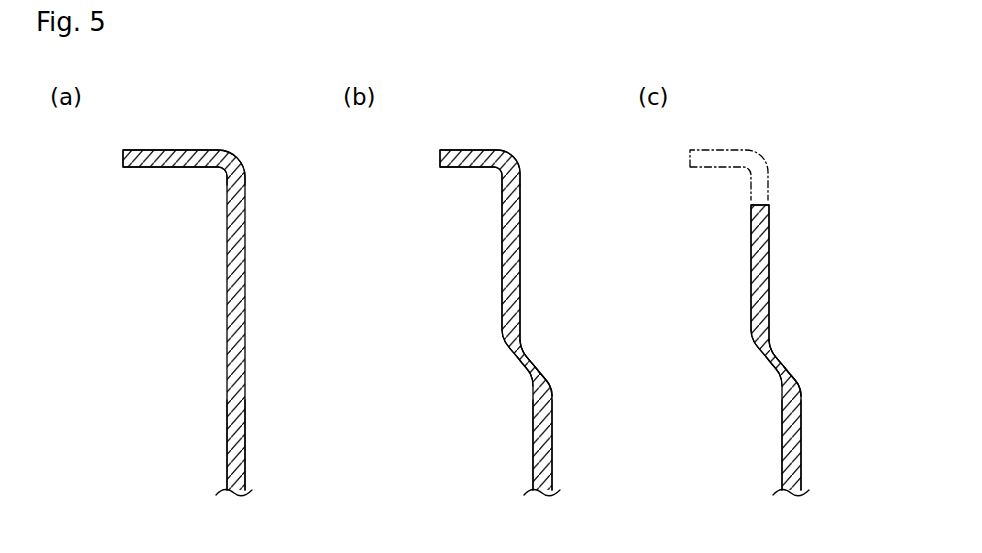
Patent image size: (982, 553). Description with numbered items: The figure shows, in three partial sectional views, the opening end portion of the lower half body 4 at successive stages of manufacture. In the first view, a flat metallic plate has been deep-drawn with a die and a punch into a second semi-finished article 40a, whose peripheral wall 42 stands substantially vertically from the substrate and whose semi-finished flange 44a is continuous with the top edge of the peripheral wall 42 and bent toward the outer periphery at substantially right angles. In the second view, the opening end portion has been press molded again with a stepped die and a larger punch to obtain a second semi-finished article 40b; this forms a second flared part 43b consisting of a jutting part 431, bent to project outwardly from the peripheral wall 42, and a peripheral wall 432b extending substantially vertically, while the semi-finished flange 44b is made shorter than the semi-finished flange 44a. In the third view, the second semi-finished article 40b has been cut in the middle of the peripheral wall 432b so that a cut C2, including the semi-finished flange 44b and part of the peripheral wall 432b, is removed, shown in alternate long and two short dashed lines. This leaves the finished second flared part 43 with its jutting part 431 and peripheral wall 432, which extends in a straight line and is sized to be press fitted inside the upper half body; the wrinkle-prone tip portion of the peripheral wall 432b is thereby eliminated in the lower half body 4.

The second semi-finished article 40a is at (246, 363).
The semi-finished flange 44a is at (186, 152).
The second semi-finished article 40b is at (489, 228).
The semi-finished flange 44b is at (468, 157).
The peripheral wall 432b is at (520, 245).
The second flared part 43b is at (502, 342).
The lower half body 4 is at (739, 229).
The cut C2 is at (708, 157).
The peripheral wall 432 is at (788, 264).
The second flared part 43 is at (751, 342).
The jutting part 431 is at (541, 364).
The peripheral wall 42 is at (228, 441).